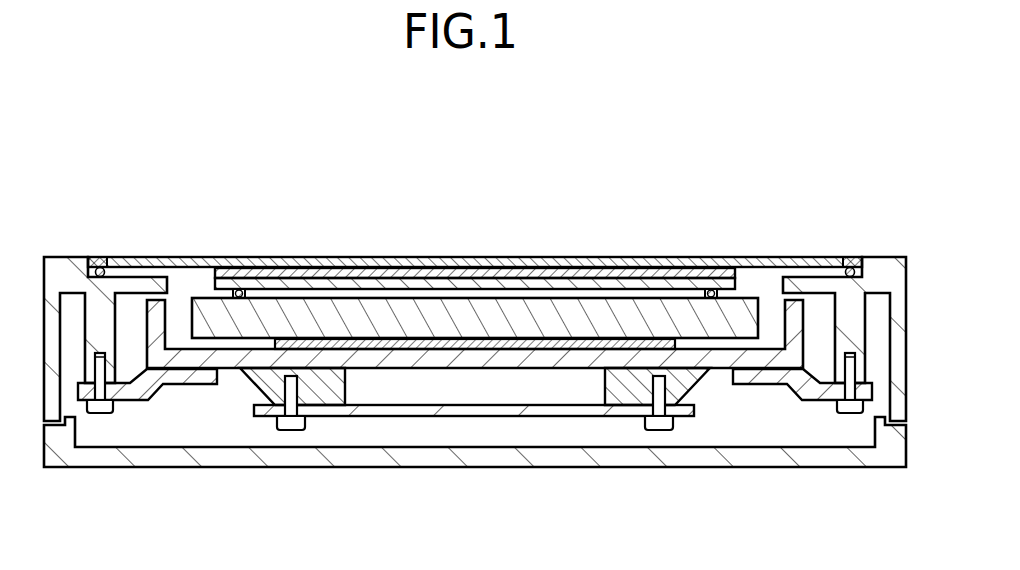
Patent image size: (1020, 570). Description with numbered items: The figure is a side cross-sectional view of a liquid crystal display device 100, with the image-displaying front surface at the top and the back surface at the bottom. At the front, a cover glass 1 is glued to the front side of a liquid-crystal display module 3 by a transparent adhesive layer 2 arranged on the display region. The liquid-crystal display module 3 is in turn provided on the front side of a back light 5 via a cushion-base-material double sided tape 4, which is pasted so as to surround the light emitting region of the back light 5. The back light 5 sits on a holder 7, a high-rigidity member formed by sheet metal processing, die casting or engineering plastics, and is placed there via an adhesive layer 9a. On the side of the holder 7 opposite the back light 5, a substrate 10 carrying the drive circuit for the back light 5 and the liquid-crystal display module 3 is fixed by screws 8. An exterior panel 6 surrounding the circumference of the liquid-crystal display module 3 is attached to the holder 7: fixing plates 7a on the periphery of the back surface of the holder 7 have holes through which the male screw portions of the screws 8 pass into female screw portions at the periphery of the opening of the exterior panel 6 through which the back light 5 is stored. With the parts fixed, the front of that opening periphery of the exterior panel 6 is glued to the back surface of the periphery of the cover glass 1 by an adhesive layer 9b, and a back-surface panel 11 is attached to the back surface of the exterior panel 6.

The liquid crystal display device 100 is at (487, 141).
The cover glass 1 is at (310, 257).
The transparent adhesive layer 2 is at (438, 268).
The liquid-crystal display module 3 is at (500, 283).
The cushion-base-material double sided tape 4 is at (240, 289).
The back light 5 is at (566, 320).
The exterior panel 6 is at (67, 257).
The holder 7 is at (231, 369).
The fixing plates 7a is at (162, 400).
The screws 8 is at (97, 413).
The adhesive layer 9a is at (402, 349).
The adhesive layer 9b is at (102, 268).
The substrate 10 is at (470, 416).
The back-surface panel 11 is at (550, 458).